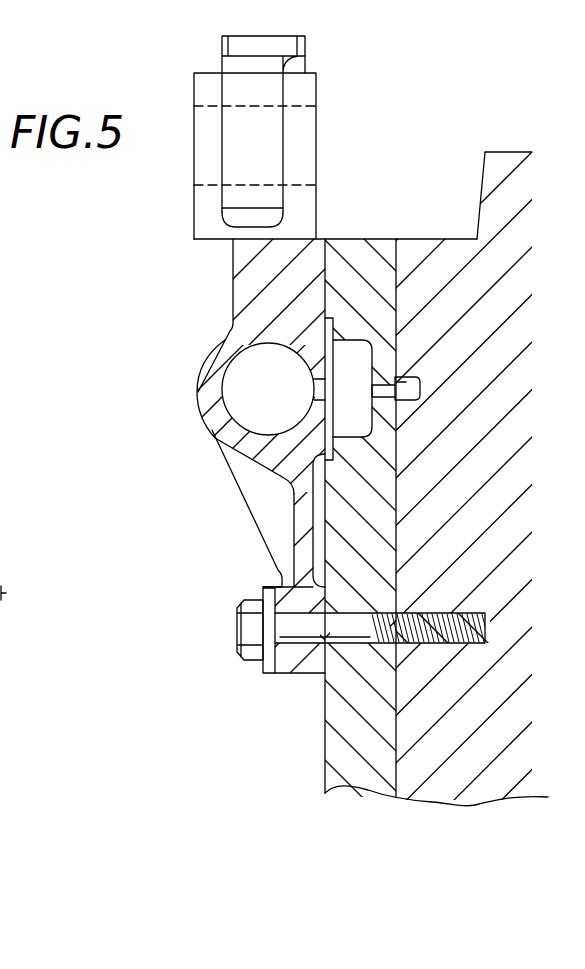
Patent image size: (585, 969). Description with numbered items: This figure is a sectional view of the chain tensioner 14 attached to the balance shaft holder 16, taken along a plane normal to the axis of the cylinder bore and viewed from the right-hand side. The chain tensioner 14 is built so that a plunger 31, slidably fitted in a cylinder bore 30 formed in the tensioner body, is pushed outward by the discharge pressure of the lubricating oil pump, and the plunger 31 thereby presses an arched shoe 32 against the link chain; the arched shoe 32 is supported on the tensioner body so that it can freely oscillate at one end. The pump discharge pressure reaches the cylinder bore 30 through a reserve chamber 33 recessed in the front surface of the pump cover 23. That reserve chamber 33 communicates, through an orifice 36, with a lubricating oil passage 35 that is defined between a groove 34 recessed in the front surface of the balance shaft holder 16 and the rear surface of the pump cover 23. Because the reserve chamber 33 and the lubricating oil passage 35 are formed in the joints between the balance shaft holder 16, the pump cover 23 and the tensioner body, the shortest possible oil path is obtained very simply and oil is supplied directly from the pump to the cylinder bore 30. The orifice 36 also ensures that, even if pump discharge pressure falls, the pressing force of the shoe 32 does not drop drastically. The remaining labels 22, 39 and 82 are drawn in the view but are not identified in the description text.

The chain tensioner 14 is at (208, 291).
The balance shaft holder 16 is at (477, 800).
The frame 22 is at (1, 496).
The pump cover 23 is at (345, 730).
The cylinder bore 30 is at (254, 348).
The plunger 31 is at (230, 397).
The arched shoe 32 is at (233, 52).
The reserve chamber 33 is at (358, 362).
The groove 34 is at (470, 296).
The lubricating oil passage 35 is at (407, 385).
The orifice 36 is at (370, 389).
The thin plate 39 is at (331, 318).
The bolt 82 is at (247, 632).